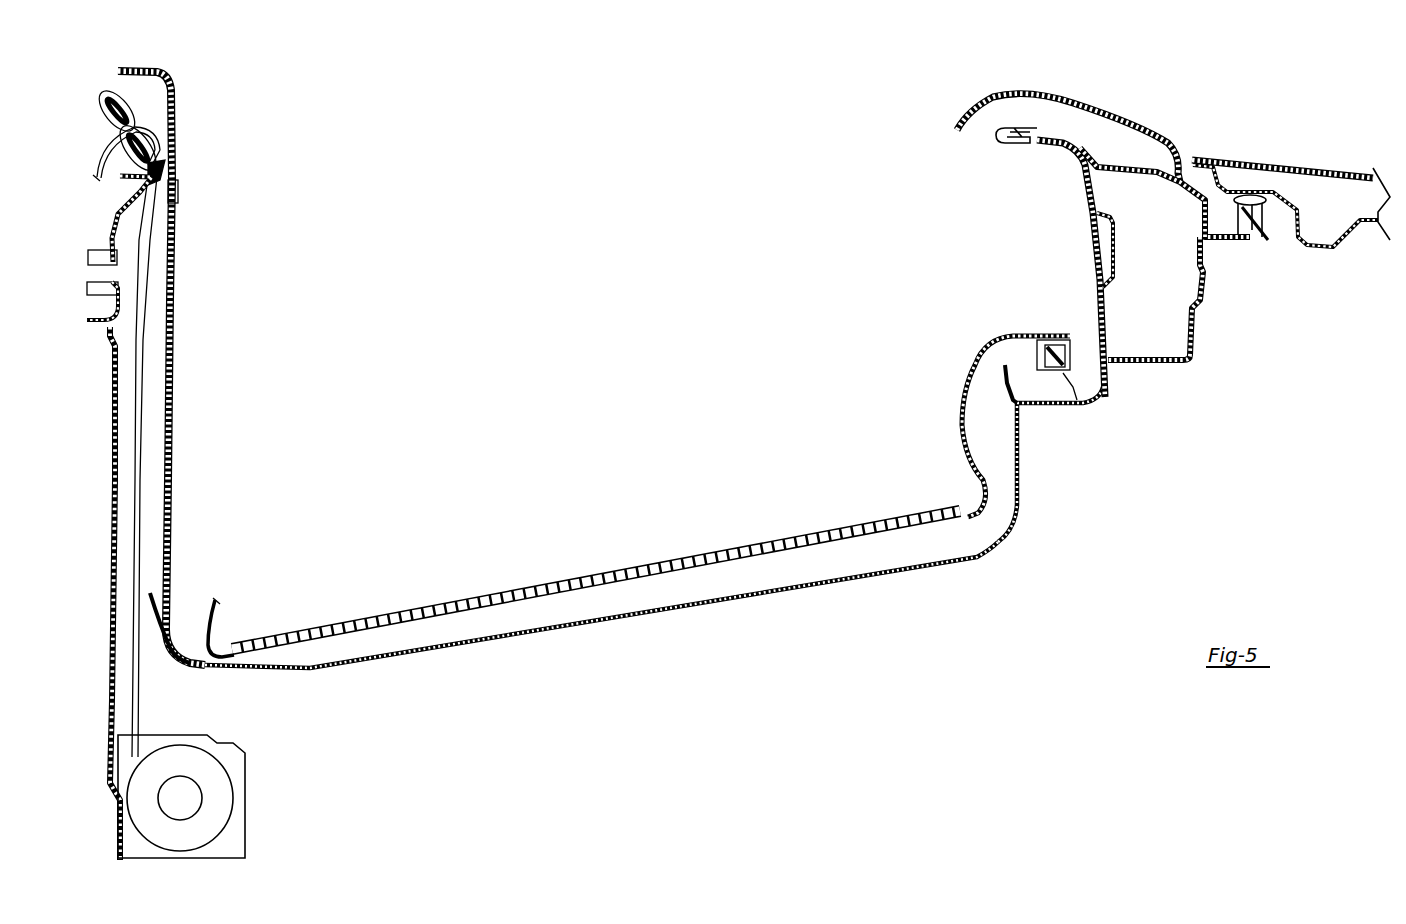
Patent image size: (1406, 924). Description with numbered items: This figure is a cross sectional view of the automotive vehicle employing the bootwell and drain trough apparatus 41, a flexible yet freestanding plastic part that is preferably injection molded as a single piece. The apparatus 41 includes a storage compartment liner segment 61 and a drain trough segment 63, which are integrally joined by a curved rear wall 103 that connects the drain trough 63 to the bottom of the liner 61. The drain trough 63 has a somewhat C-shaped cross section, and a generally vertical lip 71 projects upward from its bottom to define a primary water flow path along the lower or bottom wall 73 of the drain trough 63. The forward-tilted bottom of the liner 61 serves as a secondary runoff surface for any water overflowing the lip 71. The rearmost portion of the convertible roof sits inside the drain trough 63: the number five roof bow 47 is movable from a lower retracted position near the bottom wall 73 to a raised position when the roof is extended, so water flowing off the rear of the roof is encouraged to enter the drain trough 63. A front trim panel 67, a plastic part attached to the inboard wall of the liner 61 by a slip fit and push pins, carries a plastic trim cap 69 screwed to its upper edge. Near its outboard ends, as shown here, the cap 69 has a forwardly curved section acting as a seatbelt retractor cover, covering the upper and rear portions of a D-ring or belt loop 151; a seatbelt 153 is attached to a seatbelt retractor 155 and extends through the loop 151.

The bootwell and drain trough apparatus 41 is at (530, 156).
The roof bow 47 is at (1067, 377).
The storage compartment liner segment 61 is at (763, 595).
The drain trough segment 63 is at (1057, 145).
The front trim panel 67 is at (170, 383).
The trim cap 69 is at (160, 73).
The vertical lip 71 is at (1003, 377).
The bottom wall 73 is at (1047, 395).
The curved rear wall 103 is at (1003, 493).
The D-ring or belt loop 151 is at (103, 95).
The seatbelt 153 is at (142, 308).
The seatbelt retractor 155 is at (223, 800).